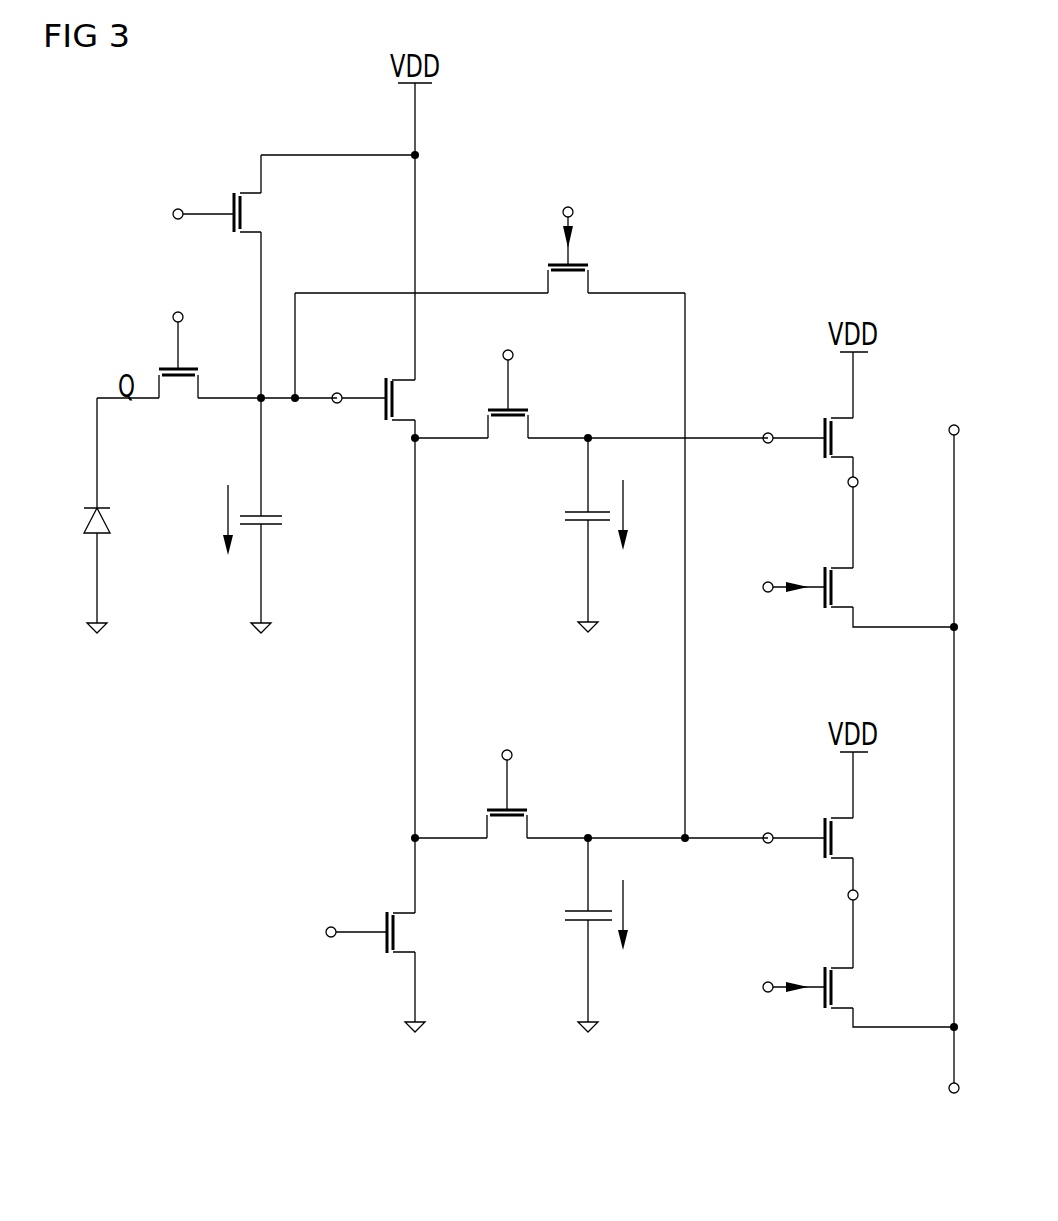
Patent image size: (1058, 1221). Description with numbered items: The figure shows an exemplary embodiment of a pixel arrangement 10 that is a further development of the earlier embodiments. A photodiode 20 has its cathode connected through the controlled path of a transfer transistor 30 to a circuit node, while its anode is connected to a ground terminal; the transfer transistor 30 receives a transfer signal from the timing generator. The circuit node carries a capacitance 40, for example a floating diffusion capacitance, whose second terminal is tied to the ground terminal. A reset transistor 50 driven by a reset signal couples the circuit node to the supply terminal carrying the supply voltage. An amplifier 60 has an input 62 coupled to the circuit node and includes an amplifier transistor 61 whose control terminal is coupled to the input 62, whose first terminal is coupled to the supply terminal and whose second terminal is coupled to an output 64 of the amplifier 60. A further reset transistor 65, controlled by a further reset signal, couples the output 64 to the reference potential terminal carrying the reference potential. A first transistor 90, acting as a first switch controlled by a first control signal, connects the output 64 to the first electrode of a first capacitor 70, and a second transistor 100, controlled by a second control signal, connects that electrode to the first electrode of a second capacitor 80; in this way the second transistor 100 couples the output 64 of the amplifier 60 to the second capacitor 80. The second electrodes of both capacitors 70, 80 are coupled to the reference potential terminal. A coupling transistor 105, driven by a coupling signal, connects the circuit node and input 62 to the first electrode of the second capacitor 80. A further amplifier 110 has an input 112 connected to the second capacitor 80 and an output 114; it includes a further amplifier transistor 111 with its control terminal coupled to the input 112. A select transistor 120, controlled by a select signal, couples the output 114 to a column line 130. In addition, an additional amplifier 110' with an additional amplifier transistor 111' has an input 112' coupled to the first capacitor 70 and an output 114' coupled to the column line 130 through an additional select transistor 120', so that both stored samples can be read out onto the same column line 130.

The pixel arrangement 10 is at (736, 170).
The photodiode 20 is at (90, 518).
The transfer transistor 30 is at (180, 380).
The capacitance 40 is at (282, 520).
The reset transistor 50 is at (243, 213).
The amplifier 60 is at (489, 565).
The amplifier transistor 61 is at (397, 403).
The input of the amplifier 62 is at (334, 403).
The output of the amplifier 64 is at (411, 440).
The further reset transistor 65 is at (385, 922).
The first capacitor 70 is at (564, 516).
The second capacitor 80 is at (563, 915).
The first transistor 90 is at (508, 420).
The second transistor 100 is at (507, 820).
The coupling transistor 105 is at (570, 275).
The further amplifier 110 is at (845, 869).
The additional amplifier 110' is at (845, 460).
The further amplifier transistor 111 is at (868, 854).
The additional amplifier transistor 111' is at (871, 447).
The input of the further amplifier 112 is at (781, 805).
The input of the additional amplifier 112' is at (781, 405).
The output of the further amplifier 114 is at (813, 926).
The output of the additional amplifier 114' is at (812, 522).
The select transistor 120 is at (858, 1001).
The additional select transistor 120' is at (855, 601).
The column line 130 is at (952, 508).